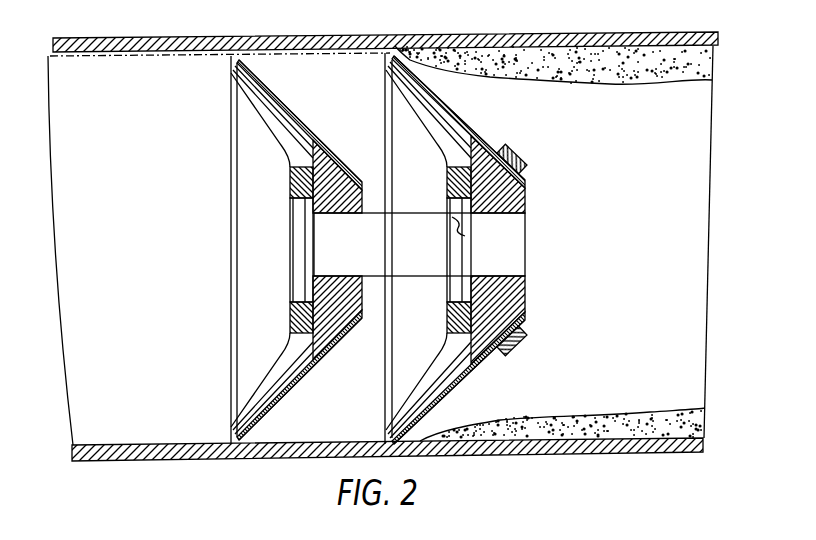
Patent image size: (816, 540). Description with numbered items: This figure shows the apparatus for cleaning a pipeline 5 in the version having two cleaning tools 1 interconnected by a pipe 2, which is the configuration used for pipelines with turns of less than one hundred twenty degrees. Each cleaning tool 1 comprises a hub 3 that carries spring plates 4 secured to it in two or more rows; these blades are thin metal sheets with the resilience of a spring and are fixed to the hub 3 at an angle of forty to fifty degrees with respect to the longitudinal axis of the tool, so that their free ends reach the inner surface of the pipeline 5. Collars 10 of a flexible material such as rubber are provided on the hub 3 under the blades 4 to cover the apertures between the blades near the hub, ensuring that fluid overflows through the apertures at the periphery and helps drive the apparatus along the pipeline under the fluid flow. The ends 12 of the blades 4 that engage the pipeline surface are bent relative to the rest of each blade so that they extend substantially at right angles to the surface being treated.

The cleaning tool 1 is at (328, 141).
The pipe 2 is at (405, 262).
The hub 3 is at (505, 314).
The spring plates 4 is at (450, 113).
The pipeline 5 is at (150, 45).
The collars 10 is at (427, 362).
The ends 12 is at (250, 44).